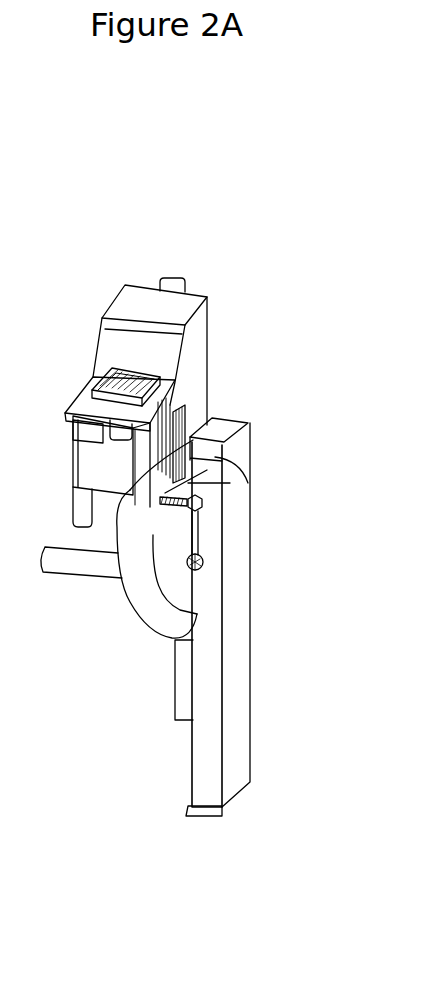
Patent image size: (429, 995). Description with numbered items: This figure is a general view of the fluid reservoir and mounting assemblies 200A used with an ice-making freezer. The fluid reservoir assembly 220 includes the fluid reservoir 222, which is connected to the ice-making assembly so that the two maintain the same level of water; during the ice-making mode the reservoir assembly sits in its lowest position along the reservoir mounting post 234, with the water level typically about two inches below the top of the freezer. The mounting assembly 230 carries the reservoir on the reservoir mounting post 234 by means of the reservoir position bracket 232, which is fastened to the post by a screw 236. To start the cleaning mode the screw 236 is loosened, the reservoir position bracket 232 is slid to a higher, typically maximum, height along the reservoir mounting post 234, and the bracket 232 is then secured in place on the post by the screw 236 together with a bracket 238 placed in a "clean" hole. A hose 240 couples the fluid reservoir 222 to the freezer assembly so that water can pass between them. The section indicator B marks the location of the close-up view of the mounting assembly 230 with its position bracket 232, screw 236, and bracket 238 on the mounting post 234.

The fluid reservoir and mounting assemblies 200A is at (281, 149).
The fluid reservoir assembly 220 is at (232, 263).
The fluid reservoir 222 is at (208, 345).
The mounting assembly 230 is at (260, 782).
The reservoir position bracket 232 is at (228, 600).
The reservoir mounting post 234 is at (250, 690).
The screw 236 is at (190, 499).
The bracket 238 is at (202, 537).
The hose 240 is at (112, 580).
The section line B is at (265, 508).